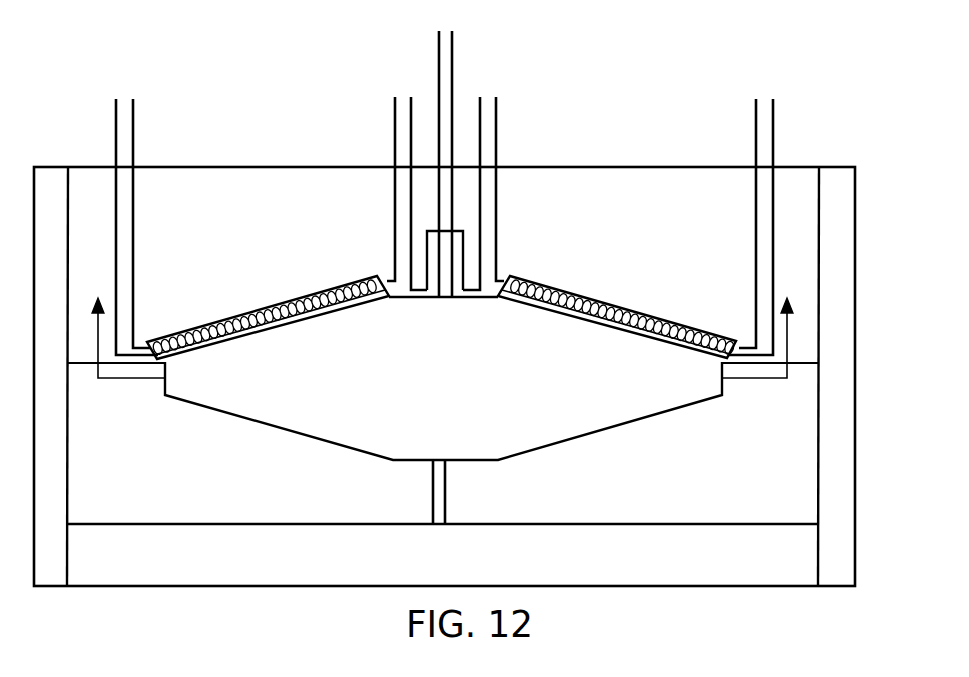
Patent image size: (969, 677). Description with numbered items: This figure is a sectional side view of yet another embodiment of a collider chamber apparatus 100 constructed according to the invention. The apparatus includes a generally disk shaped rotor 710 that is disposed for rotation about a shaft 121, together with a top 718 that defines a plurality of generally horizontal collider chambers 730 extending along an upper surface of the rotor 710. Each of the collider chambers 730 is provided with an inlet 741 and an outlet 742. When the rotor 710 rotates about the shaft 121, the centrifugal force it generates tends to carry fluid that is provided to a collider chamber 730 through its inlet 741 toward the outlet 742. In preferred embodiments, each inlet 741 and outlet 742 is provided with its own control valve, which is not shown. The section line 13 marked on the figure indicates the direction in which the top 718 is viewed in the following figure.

The collider chamber apparatus 100 is at (141, 617).
The shaft 121 is at (439, 48).
The line 13- 13 is at (443, 324).
The rotor 710 is at (300, 436).
The top 718 is at (190, 165).
The collider chamber 730 is at (288, 303).
The inlet 741 is at (395, 126).
The outlet 742 is at (116, 115).